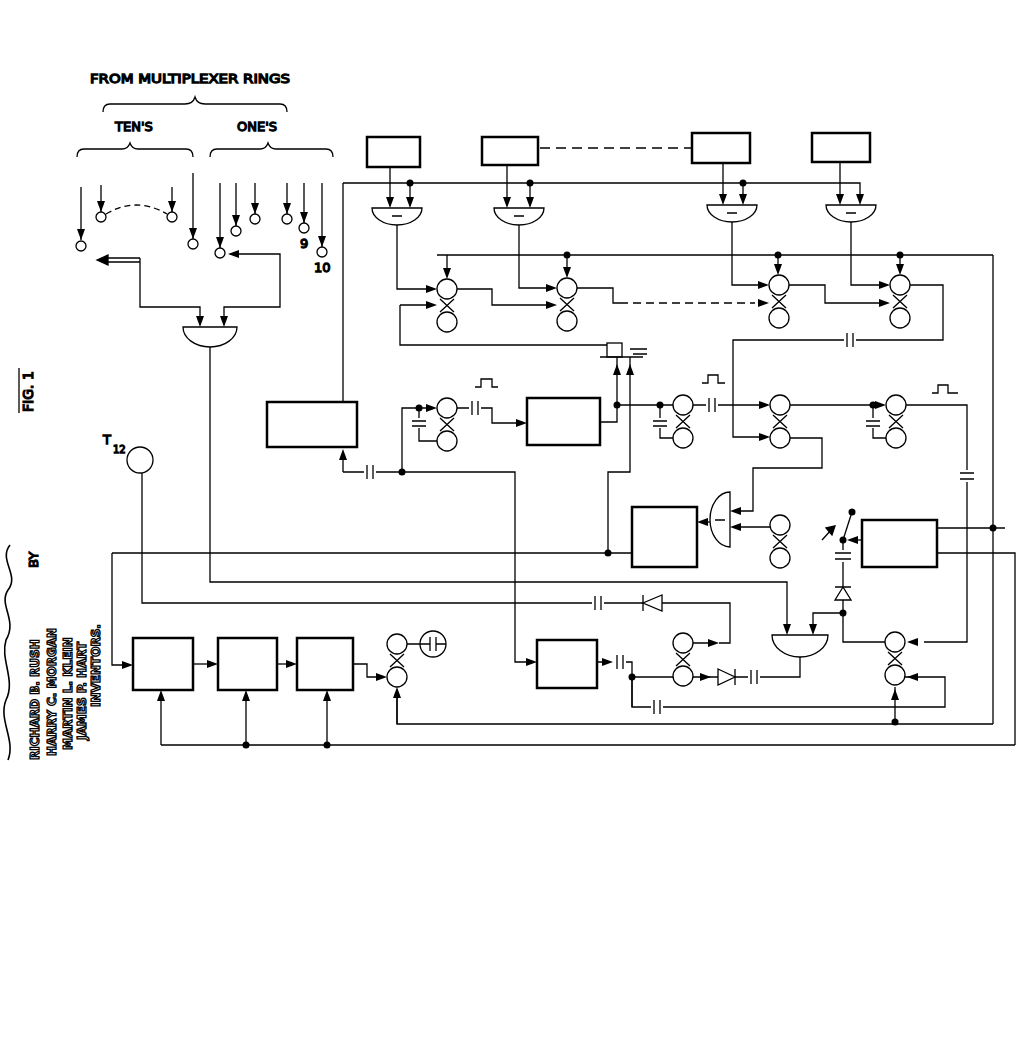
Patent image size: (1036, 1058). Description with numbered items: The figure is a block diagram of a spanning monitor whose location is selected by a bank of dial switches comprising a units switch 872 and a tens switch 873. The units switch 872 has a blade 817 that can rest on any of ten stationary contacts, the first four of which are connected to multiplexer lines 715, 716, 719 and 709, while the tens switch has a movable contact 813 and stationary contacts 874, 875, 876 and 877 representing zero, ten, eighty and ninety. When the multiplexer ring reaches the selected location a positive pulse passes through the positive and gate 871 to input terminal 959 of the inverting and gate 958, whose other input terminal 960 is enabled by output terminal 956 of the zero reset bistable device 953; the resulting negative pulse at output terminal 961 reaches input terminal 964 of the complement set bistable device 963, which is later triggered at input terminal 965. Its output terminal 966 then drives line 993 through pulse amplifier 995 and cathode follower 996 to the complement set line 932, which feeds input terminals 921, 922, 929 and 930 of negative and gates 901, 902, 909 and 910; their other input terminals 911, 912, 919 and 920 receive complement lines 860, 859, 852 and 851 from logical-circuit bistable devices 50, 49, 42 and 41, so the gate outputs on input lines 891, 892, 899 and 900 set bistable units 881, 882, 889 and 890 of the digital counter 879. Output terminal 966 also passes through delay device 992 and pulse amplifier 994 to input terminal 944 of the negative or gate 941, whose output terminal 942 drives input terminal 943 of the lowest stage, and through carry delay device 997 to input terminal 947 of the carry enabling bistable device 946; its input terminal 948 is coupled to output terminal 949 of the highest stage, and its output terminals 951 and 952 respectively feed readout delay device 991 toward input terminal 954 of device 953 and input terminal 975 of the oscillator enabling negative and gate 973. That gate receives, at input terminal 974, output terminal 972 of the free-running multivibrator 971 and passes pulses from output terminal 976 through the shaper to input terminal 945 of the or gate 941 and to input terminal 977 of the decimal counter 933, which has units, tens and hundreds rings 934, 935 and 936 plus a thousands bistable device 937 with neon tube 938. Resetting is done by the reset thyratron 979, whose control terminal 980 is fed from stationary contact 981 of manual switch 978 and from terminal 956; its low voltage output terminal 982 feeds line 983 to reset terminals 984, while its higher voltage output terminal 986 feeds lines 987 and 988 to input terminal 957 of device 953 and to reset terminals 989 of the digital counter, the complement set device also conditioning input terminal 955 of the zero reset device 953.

The logical-circuit bistable device 41 is at (848, 138).
The logical-circuit bistable device 42 is at (722, 138).
The logical-circuit bistable device 49 is at (510, 143).
The logical-circuit bistable device 50 is at (392, 143).
The multiplexer line 709 is at (288, 190).
The multiplexer line 715 is at (219, 226).
The multiplexer line 716 is at (236, 196).
The multiplexer line 719 is at (256, 196).
The movable contact 813 is at (122, 264).
The blade 817 is at (258, 262).
The complement indicating line 851 is at (848, 168).
The complement indicating line 852 is at (730, 168).
The complement indicating line 859 is at (514, 168).
The complement indicating line 860 is at (396, 168).
The positive and gate 871 is at (218, 320).
The dial switch 872 is at (254, 281).
The dial switch 873 is at (123, 252).
The stationary contact 874 is at (78, 250).
The stationary contact 875 is at (81, 222).
The stationary contact 876 is at (167, 222).
The stationary contact 877 is at (190, 248).
The digital binary counter 879 is at (668, 283).
The bistable electronic valve unit 881 is at (459, 320).
The bistable electronic valve unit 882 is at (557, 316).
The bistable electronic valve unit 889 is at (790, 318).
The bistable electronic valve unit 890 is at (916, 301).
The input line 891 is at (395, 256).
The input line 892 is at (528, 290).
The input line 899 is at (744, 288).
The input line 900 is at (862, 288).
The negative and gate 901 is at (420, 217).
The negative and gate 902 is at (543, 217).
The negative and gate 909 is at (755, 214).
The negative and gate 910 is at (873, 214).
The gate input terminal 911 is at (387, 188).
The gate input terminal 912 is at (504, 188).
The gate input terminal 919 is at (720, 186).
The gate input terminal 920 is at (837, 186).
The gate input terminal 921 is at (415, 188).
The gate input terminal 922 is at (535, 188).
The gate input terminal 929 is at (749, 186).
The gate input terminal 930 is at (866, 186).
The complement set line 932 is at (650, 184).
The decimal counter 933 is at (302, 742).
The units counter unit 934 is at (160, 640).
The tens counter unit 935 is at (246, 640).
The hundreds counter unit 936 is at (326, 640).
The bistable valve device 937 is at (406, 657).
The neon tube 938 is at (440, 658).
The negative or gate 941 is at (609, 343).
The output terminal 942 is at (656, 348).
The input terminal 943 is at (417, 311).
The input terminal 944 is at (615, 392).
The input terminal 945 is at (634, 392).
The carry enabling bistable electronic valve device 946 is at (793, 420).
The input terminal 947 is at (747, 398).
The input terminal 948 is at (742, 437).
The output terminal 949 is at (946, 293).
The output terminal 951 is at (808, 405).
The output terminal 952 is at (805, 441).
The zero reset bistable device 953 is at (888, 657).
The input terminal 954 is at (938, 642).
The input terminal 955 is at (788, 693).
The output terminal 956 is at (850, 645).
The input terminal 957 is at (888, 692).
The inverting and gate 958 is at (799, 631).
The input terminal 959 is at (783, 613).
The input terminal 960 is at (845, 617).
The output terminal 961 is at (798, 663).
The complement set bistable valve device 963 is at (692, 657).
The input terminal 964 is at (698, 698).
The input terminal 965 is at (712, 638).
The output terminal 966 is at (648, 672).
The free-running multivibrator 971 is at (790, 520).
The output terminal 972 is at (758, 535).
The oscillator enabling negative and gate 973 is at (723, 492).
The input terminal 974 is at (725, 547).
The input terminal 975 is at (752, 510).
The output terminal 976 is at (700, 520).
The input terminal 977 is at (116, 678).
The manual switch 978 is at (853, 511).
The reset thyratron 979 is at (900, 568).
The input terminal 980 is at (849, 592).
The stationary contact 981 is at (836, 545).
The low voltage output terminal 982 is at (947, 555).
The line 983 is at (1012, 692).
The reset terminals 984 is at (162, 722).
The higher voltage output terminal 986 is at (986, 528).
The line 987 is at (990, 656).
The line 988 is at (996, 420).
The reset terminals 989 is at (912, 245).
The visual data readout delay device 991 is at (907, 420).
The delay device 992 is at (462, 428).
The line 993 is at (512, 491).
The pulse amplifier 994 is at (561, 448).
The pulse amplifier 995 is at (565, 688).
The cathode follower 996 is at (290, 402).
The carry delay device 997 is at (694, 419).